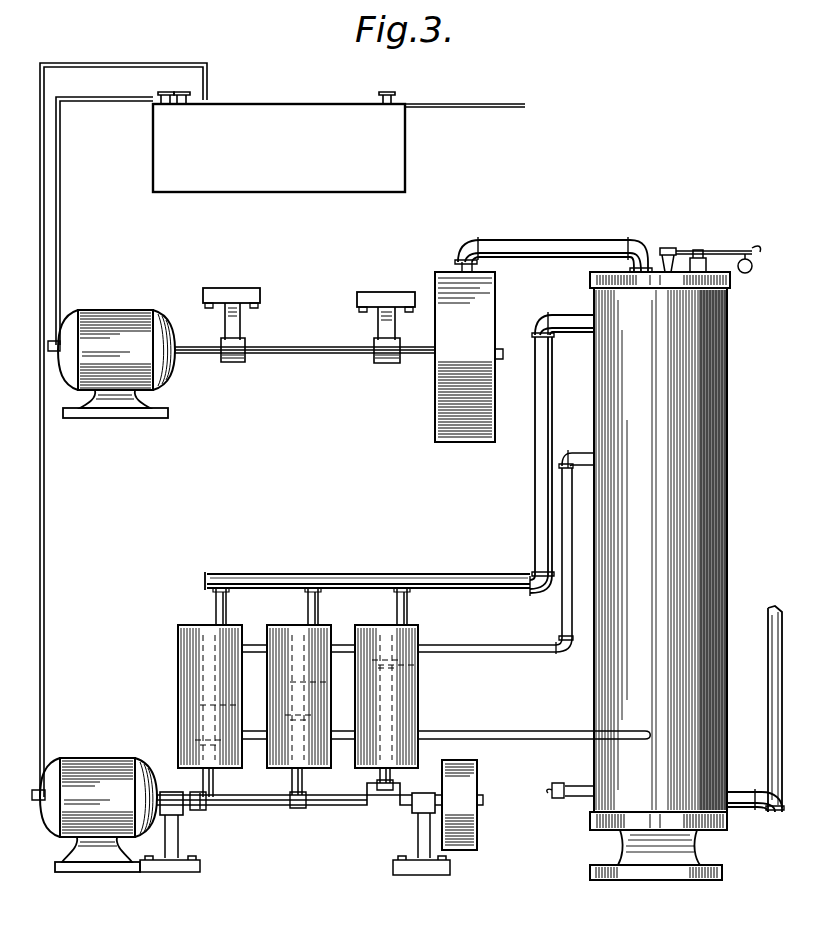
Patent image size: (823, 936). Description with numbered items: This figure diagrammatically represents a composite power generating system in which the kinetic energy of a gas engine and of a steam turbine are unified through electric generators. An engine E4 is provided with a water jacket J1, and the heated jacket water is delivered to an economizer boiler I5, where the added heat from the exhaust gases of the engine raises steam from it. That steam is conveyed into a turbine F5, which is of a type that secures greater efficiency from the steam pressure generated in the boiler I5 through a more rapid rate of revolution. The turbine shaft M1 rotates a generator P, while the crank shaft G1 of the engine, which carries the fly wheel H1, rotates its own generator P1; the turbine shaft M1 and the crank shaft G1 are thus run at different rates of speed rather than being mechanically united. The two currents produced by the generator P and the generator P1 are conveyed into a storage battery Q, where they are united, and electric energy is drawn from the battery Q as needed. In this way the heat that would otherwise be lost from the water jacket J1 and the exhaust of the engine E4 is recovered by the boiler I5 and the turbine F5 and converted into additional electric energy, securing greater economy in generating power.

The storage battery Q is at (339, 142).
The generator P is at (115, 345).
The turbine shaft M1 is at (290, 354).
The turbine F5 is at (464, 365).
The economizer boiler I5 is at (665, 485).
The engine E4 is at (341, 598).
The water jacket J1 is at (440, 698).
The generator P1 is at (90, 790).
The crank shaft G1 is at (337, 804).
The fly wheel H1 is at (478, 848).